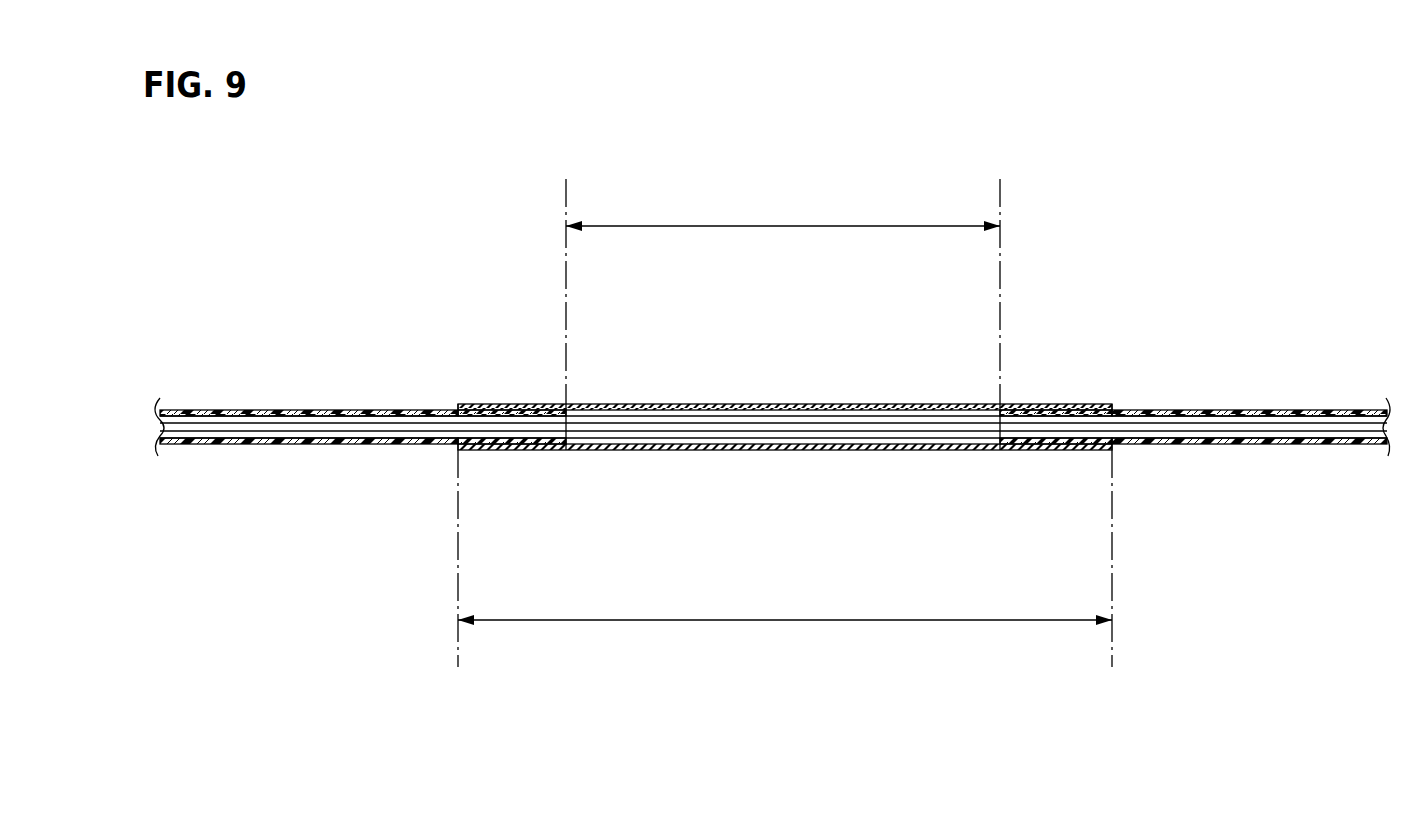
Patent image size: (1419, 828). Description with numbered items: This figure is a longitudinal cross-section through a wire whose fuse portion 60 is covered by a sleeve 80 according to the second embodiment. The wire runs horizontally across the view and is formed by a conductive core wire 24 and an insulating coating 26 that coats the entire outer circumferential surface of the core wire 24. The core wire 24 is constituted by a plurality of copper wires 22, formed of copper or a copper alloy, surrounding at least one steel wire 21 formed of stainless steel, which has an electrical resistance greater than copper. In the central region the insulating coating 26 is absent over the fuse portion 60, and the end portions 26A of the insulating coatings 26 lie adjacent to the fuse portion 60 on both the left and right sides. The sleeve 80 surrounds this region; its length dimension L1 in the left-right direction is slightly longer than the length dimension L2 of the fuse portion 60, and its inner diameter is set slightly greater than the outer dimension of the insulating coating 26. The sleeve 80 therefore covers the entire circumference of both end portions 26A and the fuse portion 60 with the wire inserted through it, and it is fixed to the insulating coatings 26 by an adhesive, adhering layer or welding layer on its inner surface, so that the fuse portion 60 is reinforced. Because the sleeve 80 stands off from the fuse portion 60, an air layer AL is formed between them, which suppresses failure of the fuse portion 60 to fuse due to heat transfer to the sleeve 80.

The steel wire 21 is at (772, 424).
The copper wire 22 is at (1181, 421).
The core wire 24 is at (296, 423).
The insulating coating 26 is at (316, 412).
The end portion of insulating coating 26A is at (515, 450).
The fuse portion 60 is at (832, 431).
The sleeve 80 is at (778, 404).
The air layer AL is at (668, 438).
The length dimension of sleeve L1 is at (790, 621).
The length dimension of fuse portion L2 is at (780, 226).